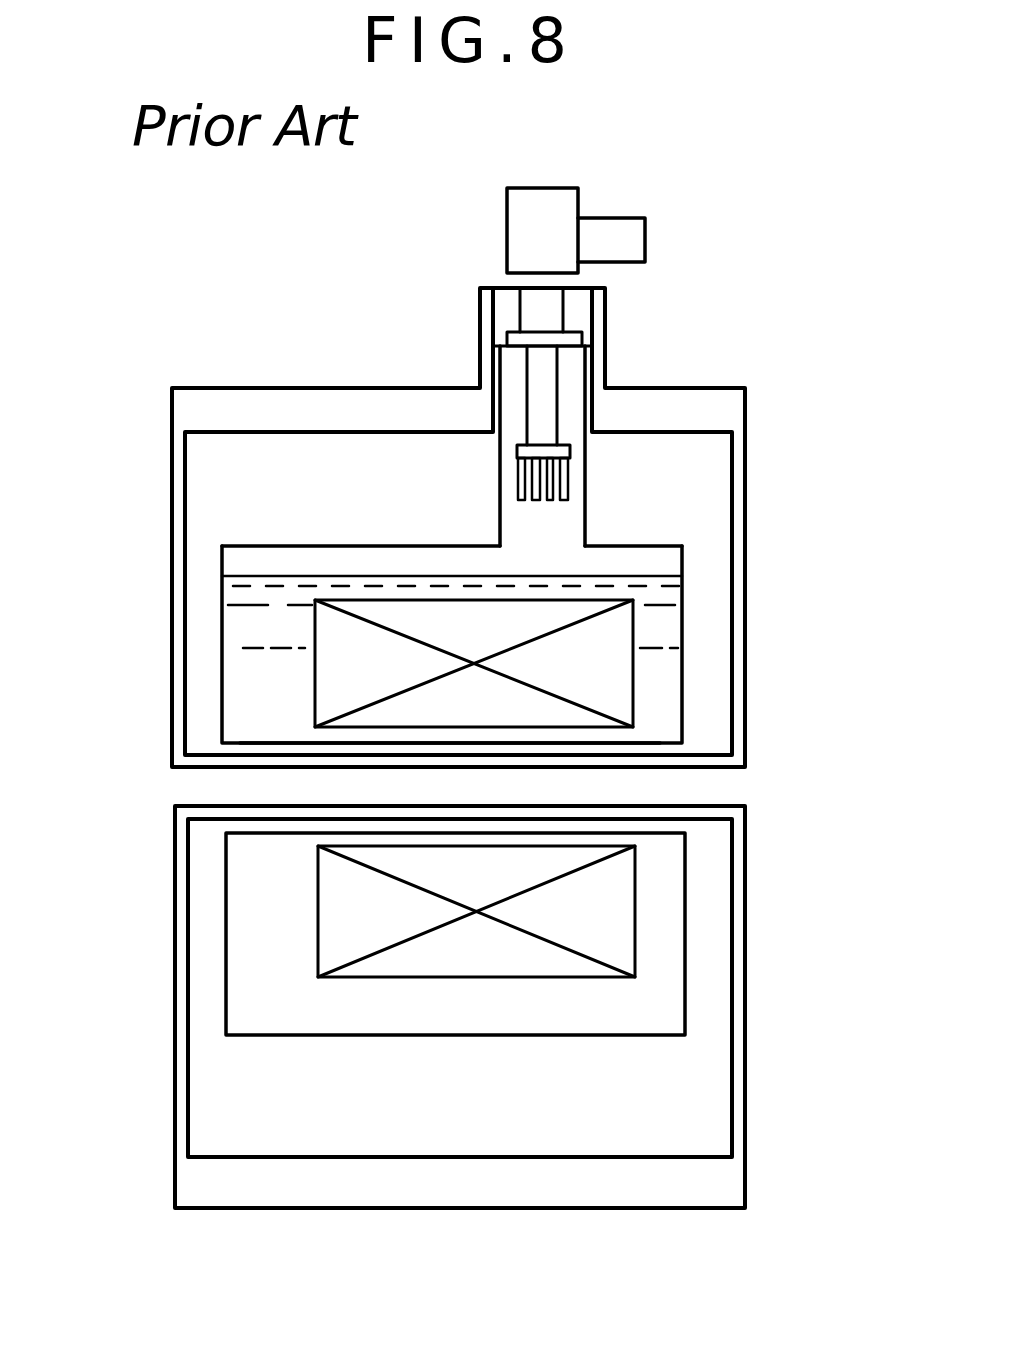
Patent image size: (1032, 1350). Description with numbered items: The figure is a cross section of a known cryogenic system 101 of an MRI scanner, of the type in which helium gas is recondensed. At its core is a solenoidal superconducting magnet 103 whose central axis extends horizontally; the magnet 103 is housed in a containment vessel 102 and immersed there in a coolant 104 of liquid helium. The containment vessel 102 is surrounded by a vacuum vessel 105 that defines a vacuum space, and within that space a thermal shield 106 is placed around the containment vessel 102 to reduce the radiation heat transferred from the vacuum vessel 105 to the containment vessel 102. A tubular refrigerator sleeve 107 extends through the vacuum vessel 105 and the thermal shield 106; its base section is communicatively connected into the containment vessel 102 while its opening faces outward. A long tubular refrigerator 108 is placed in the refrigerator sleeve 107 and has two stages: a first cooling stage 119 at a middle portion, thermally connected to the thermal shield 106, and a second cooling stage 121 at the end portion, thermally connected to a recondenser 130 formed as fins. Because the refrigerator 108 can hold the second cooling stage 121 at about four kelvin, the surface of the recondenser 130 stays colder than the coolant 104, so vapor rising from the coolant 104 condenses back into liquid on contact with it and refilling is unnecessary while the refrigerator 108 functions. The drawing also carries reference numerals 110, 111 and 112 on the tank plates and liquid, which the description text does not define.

The cryogenic system 101 is at (798, 364).
The containment vessel 102 is at (682, 660).
The superconducting magnet 103 is at (635, 703).
The coolant 104 is at (245, 877).
The vacuum vessel 105 is at (745, 420).
The thermal shield 106 is at (735, 602).
The refrigerator sleeve 107 is at (588, 470).
The refrigerator 108 is at (535, 208).
The tank bottom 110 is at (290, 743).
The tank lid 111 is at (655, 546).
The cleaning liquid 112 is at (222, 656).
The first cooling stage 119 is at (527, 340).
The second cooling stage 121 is at (520, 447).
The recondenser 130 is at (517, 490).